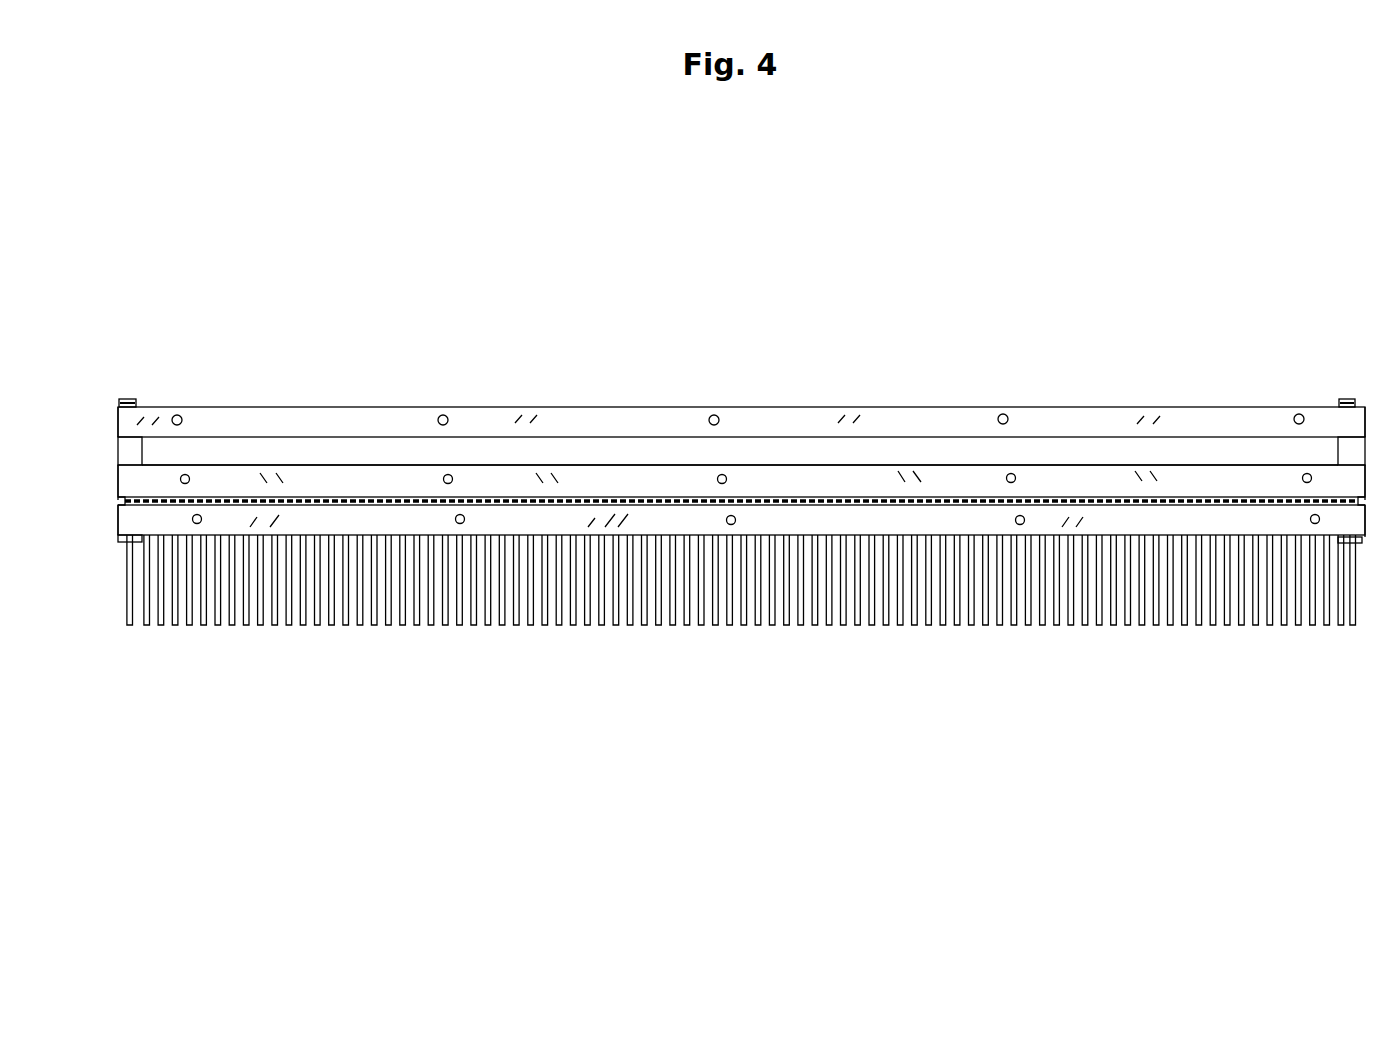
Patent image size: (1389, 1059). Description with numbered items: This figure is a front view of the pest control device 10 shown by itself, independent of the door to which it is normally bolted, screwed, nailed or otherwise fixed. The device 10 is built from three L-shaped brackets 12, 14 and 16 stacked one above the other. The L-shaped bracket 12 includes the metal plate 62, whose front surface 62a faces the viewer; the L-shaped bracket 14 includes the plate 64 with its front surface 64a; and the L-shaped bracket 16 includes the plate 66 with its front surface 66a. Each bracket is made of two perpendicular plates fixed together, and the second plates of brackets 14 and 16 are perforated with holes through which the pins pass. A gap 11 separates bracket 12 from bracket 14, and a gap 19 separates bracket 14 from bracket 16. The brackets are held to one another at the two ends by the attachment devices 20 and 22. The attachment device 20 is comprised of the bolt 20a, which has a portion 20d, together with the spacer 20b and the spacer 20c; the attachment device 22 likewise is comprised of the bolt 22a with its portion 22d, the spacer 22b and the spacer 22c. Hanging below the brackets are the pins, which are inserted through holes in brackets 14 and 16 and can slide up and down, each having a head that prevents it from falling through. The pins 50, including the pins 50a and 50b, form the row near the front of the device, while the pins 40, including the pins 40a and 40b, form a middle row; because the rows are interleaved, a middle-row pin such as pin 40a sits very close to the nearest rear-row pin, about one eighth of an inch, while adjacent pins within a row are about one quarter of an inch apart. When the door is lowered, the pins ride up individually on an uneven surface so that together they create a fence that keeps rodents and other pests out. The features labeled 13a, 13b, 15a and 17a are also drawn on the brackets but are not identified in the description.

The pest control device 10 is at (976, 390).
The gap 11 is at (585, 446).
The L-shaped bracket 12 is at (805, 417).
The left mounting hole 13a is at (182, 417).
The right mounting hole 13b is at (1297, 417).
The L-shaped bracket 14 is at (836, 491).
The intermediate bar hole 15a is at (190, 478).
The L-shaped bracket 16 is at (806, 529).
The lower bar hole 17a is at (203, 519).
The gap 19 is at (484, 497).
The attachment device 20 is at (125, 397).
The bolt 20a is at (138, 401).
The spacer 20b is at (143, 451).
The spacer 20c is at (120, 498).
The portion of bolt 20d is at (122, 539).
The attachment device 22 is at (1352, 397).
The bolt 22a is at (1344, 401).
The spacer 22b is at (1340, 455).
The spacer 22c is at (1362, 500).
The portion of bolt 22d is at (1363, 538).
The pins 40 is at (176, 630).
The pin 40a is at (146, 632).
The pin 40b is at (1353, 632).
The pins 50 is at (160, 632).
The pin 50a is at (130, 632).
The pin 50b is at (1340, 632).
The plate 62 is at (477, 412).
The front surface 62a is at (313, 418).
The plate 64 is at (774, 485).
The front surface 64a is at (637, 489).
The plate 66 is at (894, 529).
The front surface 66a is at (962, 529).